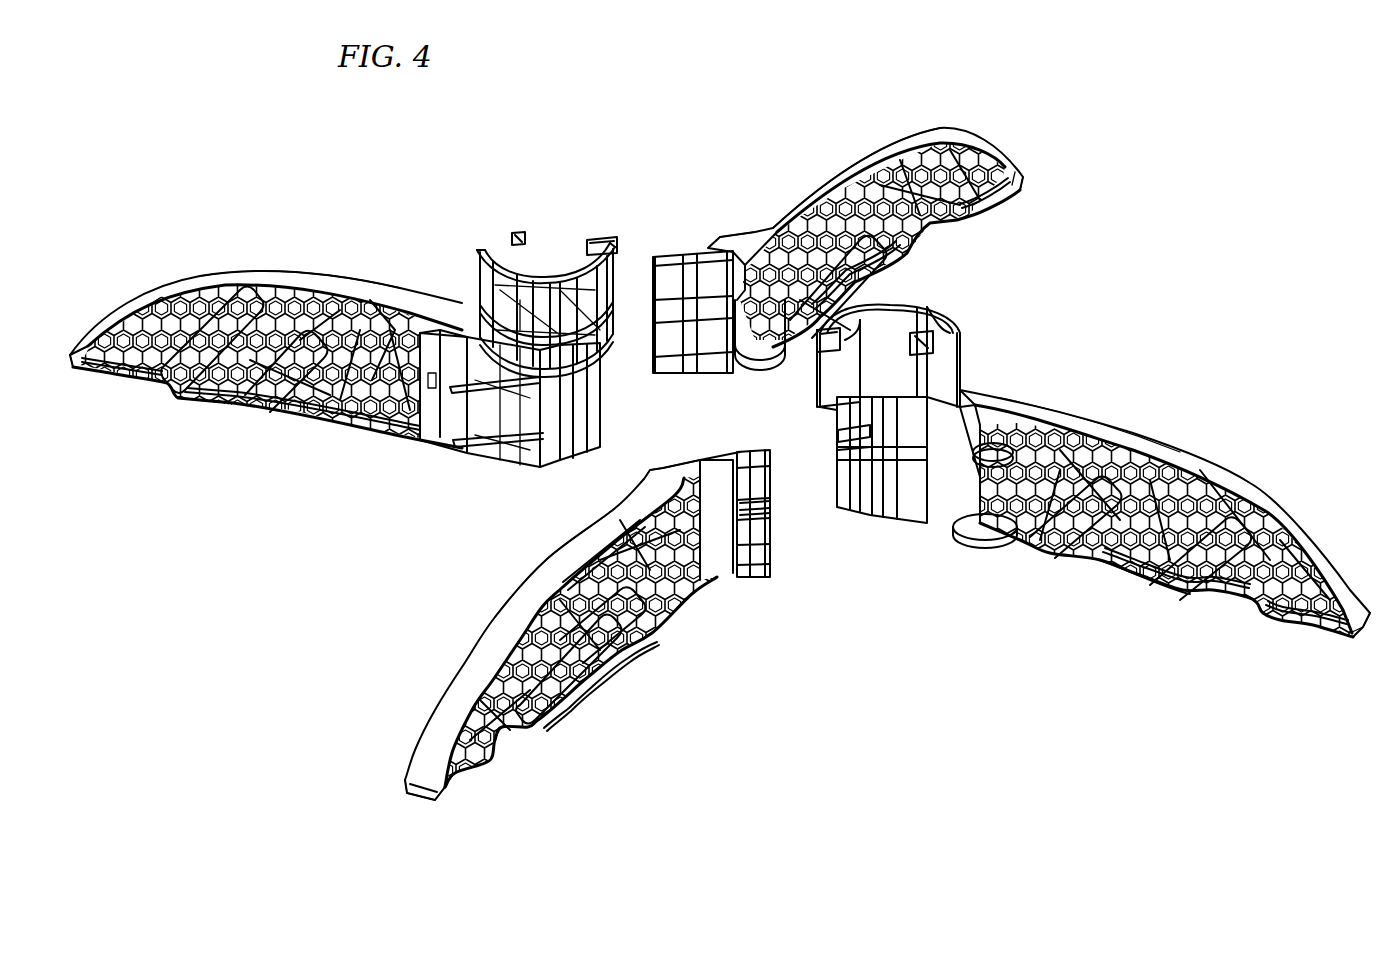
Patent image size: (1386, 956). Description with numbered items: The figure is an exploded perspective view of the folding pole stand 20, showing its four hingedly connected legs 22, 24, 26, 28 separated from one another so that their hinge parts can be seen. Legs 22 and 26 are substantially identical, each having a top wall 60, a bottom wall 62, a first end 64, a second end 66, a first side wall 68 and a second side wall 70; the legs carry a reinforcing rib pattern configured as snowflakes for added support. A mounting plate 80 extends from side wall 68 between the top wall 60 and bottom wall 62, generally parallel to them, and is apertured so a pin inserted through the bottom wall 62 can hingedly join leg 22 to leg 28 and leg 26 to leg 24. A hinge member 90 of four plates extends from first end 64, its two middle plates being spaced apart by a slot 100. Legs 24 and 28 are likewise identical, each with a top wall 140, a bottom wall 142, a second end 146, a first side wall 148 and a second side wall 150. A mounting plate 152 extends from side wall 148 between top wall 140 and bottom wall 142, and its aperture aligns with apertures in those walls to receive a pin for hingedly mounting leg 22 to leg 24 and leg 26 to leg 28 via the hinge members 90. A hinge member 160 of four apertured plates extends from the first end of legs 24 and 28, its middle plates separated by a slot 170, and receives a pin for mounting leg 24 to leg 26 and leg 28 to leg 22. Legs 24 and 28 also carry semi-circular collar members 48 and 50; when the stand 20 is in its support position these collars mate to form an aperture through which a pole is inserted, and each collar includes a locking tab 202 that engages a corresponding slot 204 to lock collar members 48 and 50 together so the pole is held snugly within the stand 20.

The folding pole stand 20 is at (541, 152).
The leg 22 is at (463, 651).
The leg 24 is at (1186, 456).
The leg 26 is at (889, 136).
The leg 28 is at (273, 278).
The semi-circular collar member 48 is at (928, 318).
The semi-circular collar member 50 is at (536, 246).
The top wall 60 is at (806, 190).
The bottom wall 62 is at (1000, 205).
The first end 64 is at (750, 234).
The second end 66 is at (1018, 178).
The first side wall 68 is at (936, 237).
The second side wall 70 is at (626, 646).
The mounting plate 80 is at (746, 356).
The hinge member 90 is at (660, 246).
The slot 100 is at (790, 485).
The top wall 140 is at (366, 296).
The bottom wall 142 is at (190, 385).
The second end 146 is at (80, 372).
The first side wall 148 is at (1062, 551).
The second side wall 150 is at (284, 412).
The mounting plate 152 is at (985, 465).
The hinge member 160 is at (614, 382).
The slot 170 is at (839, 460).
The locking tab 202 is at (513, 243).
The slot 204 is at (601, 241).